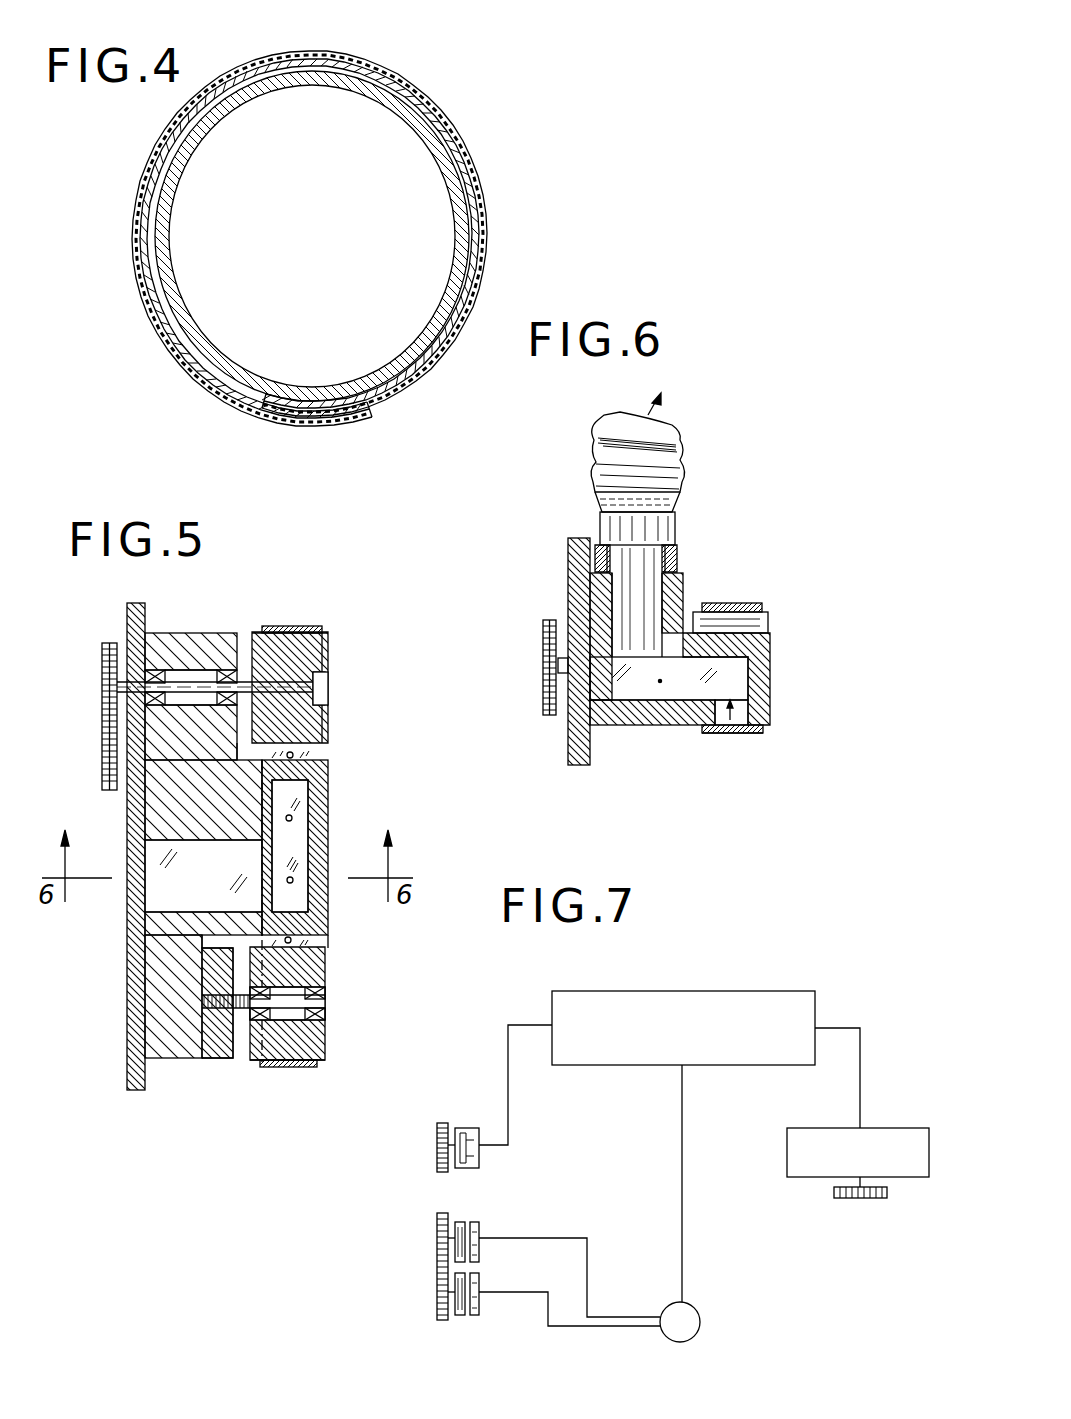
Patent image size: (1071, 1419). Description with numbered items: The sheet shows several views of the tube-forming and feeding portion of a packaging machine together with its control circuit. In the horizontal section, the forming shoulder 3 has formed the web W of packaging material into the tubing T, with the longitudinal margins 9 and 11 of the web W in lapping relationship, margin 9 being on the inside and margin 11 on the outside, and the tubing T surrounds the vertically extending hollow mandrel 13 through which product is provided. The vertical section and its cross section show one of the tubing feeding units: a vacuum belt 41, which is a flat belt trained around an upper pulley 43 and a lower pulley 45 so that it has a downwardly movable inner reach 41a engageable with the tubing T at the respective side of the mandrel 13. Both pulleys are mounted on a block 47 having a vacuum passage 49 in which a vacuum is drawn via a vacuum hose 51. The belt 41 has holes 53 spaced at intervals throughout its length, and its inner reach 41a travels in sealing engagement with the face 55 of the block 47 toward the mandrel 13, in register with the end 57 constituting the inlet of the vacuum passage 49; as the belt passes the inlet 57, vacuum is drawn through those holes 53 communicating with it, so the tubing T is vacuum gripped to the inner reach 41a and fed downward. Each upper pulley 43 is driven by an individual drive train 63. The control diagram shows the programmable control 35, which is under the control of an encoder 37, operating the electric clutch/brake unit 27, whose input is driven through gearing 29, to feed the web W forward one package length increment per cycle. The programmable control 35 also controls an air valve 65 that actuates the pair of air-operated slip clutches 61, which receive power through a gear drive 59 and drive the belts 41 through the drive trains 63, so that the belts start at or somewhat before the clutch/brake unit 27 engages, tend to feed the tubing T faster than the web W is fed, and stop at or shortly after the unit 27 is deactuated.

In FIG. 4, the forming shoulder 3 is at (156, 246).
In FIG. 4, the longitudinal margin 9 is at (322, 397).
In FIG. 4, the longitudinal margin 11 is at (326, 437).
In FIG. 4, the mandrel 13 is at (196, 342).
In FIG. 4, the tubing T is at (433, 90).
In FIG. 4, the web W is at (498, 192).
In FIG. 7, the electric clutch/brake unit 27 is at (467, 1128).
In FIG. 7, the gearing 29 is at (437, 1140).
In FIG. 7, the programmable control 35 is at (760, 992).
In FIG. 7, the encoder 37 is at (808, 1178).
In FIG. 5, the vacuum belt 41 is at (310, 627).
In FIG. 6, the vacuum belt 41 is at (757, 612).
In FIG. 6, the inner reach 41a is at (753, 734).
In FIG. 5, the upper pulley 43 is at (328, 653).
In FIG. 5, the lower pulley 45 is at (325, 1038).
In FIG. 5, the block 47 is at (163, 992).
In FIG. 6, the block 47 is at (770, 682).
In FIG. 5, the vacuum passage 49 is at (209, 892).
In FIG. 6, the vacuum passage 49 is at (660, 683).
In FIG. 6, the vacuum hose 51 is at (690, 460).
In FIG. 5, the holes 53 is at (295, 626).
In FIG. 6, the holes 53 is at (732, 603).
In FIG. 6, the face 55 is at (687, 727).
In FIG. 5, the inlet end 57 is at (297, 842).
In FIG. 6, the inlet end 57 is at (738, 713).
In FIG. 7, the gear drive 59 is at (441, 1320).
In FIG. 7, the slip clutch 61 is at (480, 1225).
In FIG. 5, the drive train 63 is at (102, 740).
In FIG. 6, the drive train 63 is at (542, 693).
In FIG. 7, the air valve 65 is at (697, 1336).